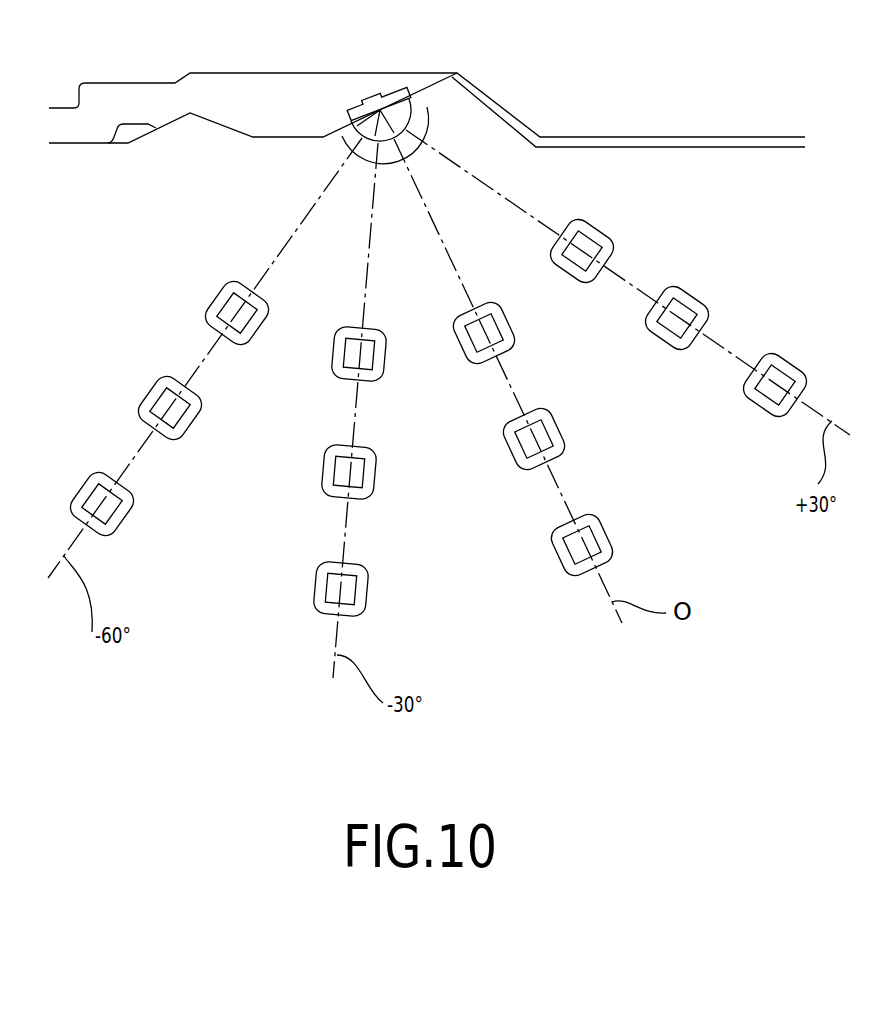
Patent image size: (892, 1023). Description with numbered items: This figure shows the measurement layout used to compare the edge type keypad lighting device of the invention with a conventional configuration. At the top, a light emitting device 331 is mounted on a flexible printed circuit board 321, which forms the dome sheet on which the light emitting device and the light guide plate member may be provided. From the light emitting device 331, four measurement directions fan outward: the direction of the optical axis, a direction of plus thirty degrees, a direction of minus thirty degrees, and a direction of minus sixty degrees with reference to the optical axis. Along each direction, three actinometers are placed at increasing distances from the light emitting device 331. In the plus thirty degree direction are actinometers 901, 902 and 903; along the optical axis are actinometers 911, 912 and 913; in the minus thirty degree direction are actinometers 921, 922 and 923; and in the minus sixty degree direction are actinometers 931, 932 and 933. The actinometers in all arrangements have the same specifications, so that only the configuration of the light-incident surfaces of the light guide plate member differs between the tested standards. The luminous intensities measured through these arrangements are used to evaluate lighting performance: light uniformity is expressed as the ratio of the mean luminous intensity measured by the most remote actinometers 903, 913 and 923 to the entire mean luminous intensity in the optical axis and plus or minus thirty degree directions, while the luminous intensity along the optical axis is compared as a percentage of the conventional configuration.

The flexible printed circuit board 321 is at (248, 87).
The light emitting device 331 is at (388, 88).
The actinometer 901 is at (562, 275).
The actinometer 902 is at (658, 342).
The actinometer 903 is at (757, 403).
The actinometer 911 is at (457, 347).
The actinometer 912 is at (507, 450).
The actinometer 913 is at (555, 557).
The actinometer 921 is at (330, 353).
The actinometer 922 is at (322, 467).
The actinometer 923 is at (312, 585).
The actinometer 931 is at (215, 300).
The actinometer 932 is at (150, 394).
The actinometer 933 is at (77, 488).